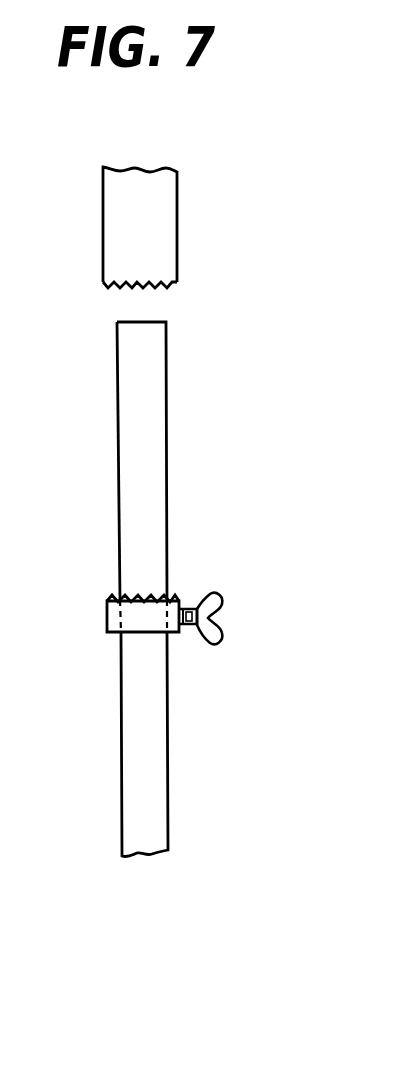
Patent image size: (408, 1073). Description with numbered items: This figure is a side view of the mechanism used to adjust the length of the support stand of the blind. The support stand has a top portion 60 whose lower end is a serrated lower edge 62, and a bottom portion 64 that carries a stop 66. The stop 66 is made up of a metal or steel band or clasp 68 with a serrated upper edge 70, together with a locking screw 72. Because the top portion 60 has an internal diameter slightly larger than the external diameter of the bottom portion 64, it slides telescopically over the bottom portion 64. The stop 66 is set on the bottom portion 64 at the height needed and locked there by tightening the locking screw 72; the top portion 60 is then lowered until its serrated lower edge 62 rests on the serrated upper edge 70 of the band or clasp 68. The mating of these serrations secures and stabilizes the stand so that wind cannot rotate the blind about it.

The top portion 60 is at (162, 217).
The serrated lower edge 62 is at (162, 281).
The bottom portion 64 is at (155, 476).
The stop 66 is at (190, 578).
The band or clasp 68 is at (108, 625).
The serrated upper edge 70 is at (137, 595).
The locking screw 72 is at (213, 608).